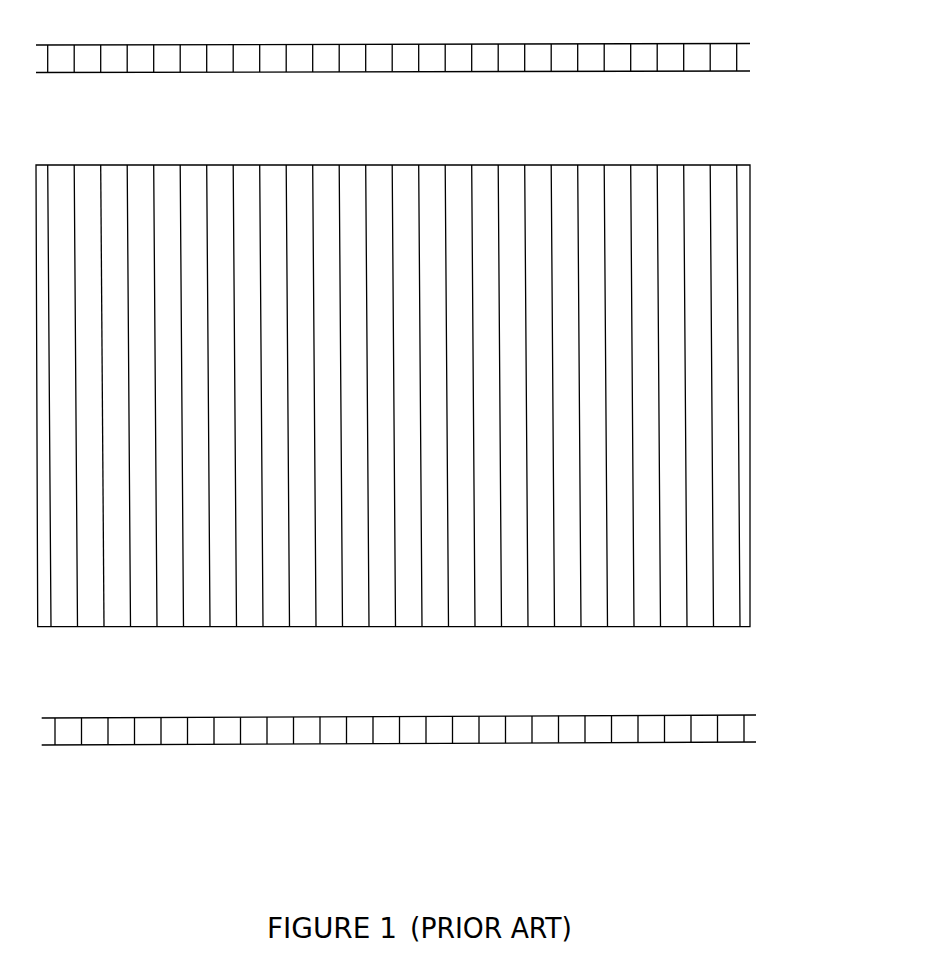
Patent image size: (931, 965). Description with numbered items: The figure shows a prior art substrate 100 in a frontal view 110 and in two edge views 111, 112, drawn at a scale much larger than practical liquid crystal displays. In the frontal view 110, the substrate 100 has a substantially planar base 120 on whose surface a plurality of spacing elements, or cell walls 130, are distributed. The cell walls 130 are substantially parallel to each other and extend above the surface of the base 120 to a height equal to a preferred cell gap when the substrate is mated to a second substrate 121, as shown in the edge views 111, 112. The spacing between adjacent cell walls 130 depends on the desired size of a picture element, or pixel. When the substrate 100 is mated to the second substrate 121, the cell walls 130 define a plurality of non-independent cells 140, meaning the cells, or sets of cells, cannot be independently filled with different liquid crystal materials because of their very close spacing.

The substrate 100 is at (750, 330).
The frontal view 110 is at (777, 163).
The edge view 111 is at (705, 43).
The edge view 112 is at (777, 713).
The base 120 is at (58, 45).
The second substrate 121 is at (57, 72).
The cell walls 130 is at (102, 53).
The non-independent cells 140 is at (218, 55).